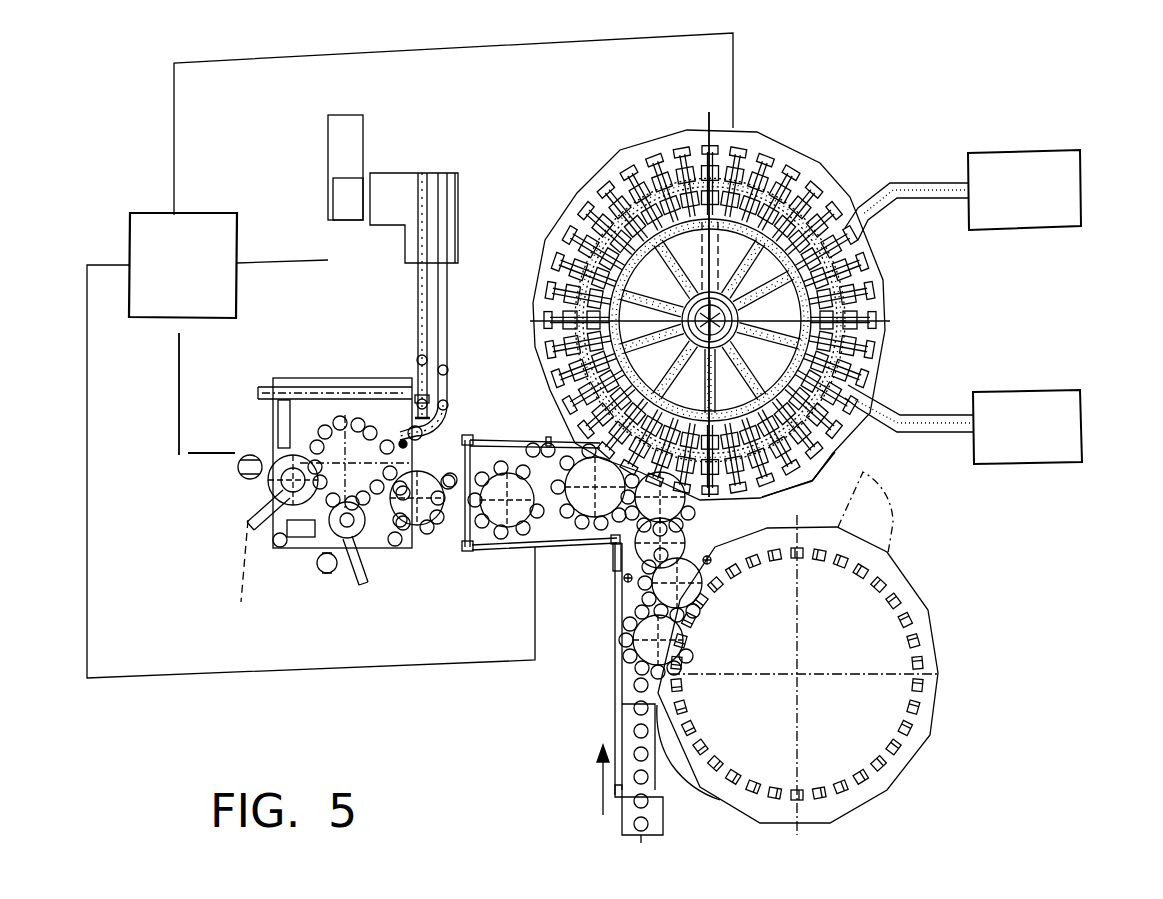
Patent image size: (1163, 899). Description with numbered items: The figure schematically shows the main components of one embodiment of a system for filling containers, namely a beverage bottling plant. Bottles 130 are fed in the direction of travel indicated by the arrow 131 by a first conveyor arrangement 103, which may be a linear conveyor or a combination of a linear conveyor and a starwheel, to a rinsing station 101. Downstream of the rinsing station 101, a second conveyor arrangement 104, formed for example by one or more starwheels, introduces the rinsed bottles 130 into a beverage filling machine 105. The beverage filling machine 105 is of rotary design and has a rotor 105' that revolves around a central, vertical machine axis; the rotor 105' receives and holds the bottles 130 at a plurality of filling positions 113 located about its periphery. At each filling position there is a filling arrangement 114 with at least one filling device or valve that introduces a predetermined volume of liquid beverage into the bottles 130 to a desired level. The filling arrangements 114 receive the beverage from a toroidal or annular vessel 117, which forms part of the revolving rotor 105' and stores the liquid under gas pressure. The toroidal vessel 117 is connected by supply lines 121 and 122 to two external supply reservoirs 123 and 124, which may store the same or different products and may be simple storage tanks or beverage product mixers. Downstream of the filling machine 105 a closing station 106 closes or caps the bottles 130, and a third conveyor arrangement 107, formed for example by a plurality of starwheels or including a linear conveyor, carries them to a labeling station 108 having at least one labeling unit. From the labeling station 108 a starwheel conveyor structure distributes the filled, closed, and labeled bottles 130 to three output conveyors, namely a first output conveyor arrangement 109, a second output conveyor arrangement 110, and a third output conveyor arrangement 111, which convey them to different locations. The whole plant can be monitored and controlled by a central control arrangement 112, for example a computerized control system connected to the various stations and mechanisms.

The rinsing station 101 is at (948, 574).
The first conveyor arrangement 103 is at (658, 760).
The second conveyor arrangement 104 is at (625, 600).
The beverage filling machine 105 is at (772, 304).
The rotor 105' is at (709, 296).
The closing station 106 is at (522, 424).
The third conveyor arrangement 107 is at (470, 556).
The labeling station 108 is at (302, 592).
The first output conveyor arrangement 109 is at (448, 356).
The second output conveyor arrangement 110 is at (420, 294).
The third output conveyor arrangement 111 is at (318, 385).
The central control arrangement 112 is at (202, 280).
The filling positions 113 is at (868, 247).
The filling arrangement 114 is at (872, 338).
The toroidal vessel 117 is at (823, 463).
The supply line 121 is at (918, 182).
The supply line 122 is at (925, 412).
The external supply reservoir 123 is at (1070, 197).
The external supply reservoir 124 is at (1082, 433).
The bottles 130 is at (653, 778).
The arrow 131 is at (584, 780).